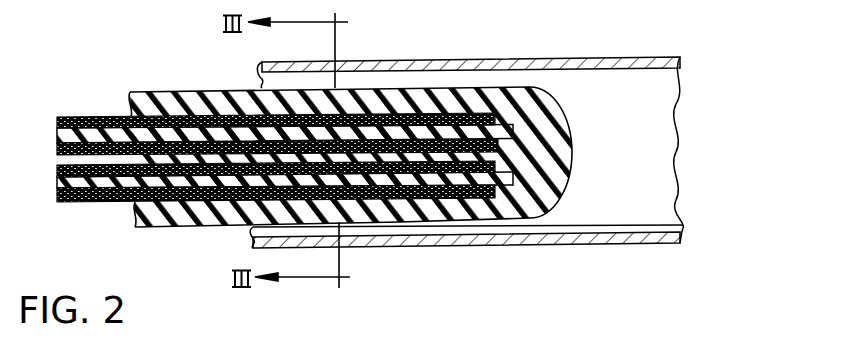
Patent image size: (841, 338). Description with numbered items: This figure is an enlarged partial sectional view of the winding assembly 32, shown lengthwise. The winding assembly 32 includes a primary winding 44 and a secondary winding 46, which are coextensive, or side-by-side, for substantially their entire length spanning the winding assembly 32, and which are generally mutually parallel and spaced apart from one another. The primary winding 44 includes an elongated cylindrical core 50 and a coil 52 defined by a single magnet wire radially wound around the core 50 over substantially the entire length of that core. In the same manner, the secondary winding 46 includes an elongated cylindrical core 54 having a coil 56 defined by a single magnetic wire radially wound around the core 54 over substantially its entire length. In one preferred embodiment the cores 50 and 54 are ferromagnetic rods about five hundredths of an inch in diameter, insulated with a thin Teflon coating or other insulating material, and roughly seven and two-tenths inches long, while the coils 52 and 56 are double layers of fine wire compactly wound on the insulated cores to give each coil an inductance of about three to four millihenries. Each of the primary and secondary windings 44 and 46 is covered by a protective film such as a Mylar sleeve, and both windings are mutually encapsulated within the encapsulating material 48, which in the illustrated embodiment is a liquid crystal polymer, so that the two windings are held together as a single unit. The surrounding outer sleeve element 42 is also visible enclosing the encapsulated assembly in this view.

The winding assembly 32 is at (88, 116).
The tubular sheath 42 is at (640, 56).
The primary winding 44 is at (462, 97).
The secondary winding 46 is at (404, 214).
The encapsulating material 48 is at (535, 89).
The core 50 is at (516, 128).
The coil 52 is at (395, 113).
The core 54 is at (556, 168).
The coil 56 is at (491, 202).